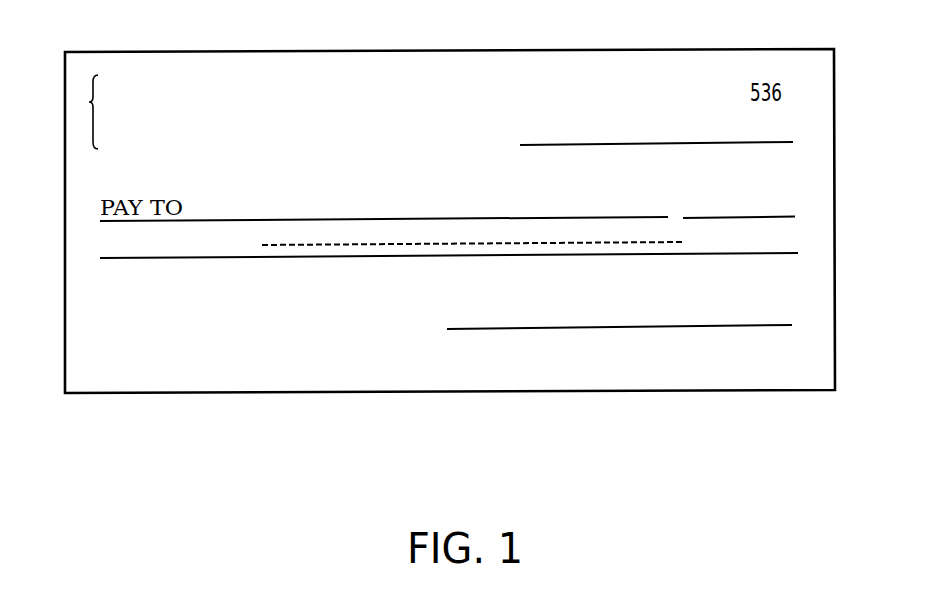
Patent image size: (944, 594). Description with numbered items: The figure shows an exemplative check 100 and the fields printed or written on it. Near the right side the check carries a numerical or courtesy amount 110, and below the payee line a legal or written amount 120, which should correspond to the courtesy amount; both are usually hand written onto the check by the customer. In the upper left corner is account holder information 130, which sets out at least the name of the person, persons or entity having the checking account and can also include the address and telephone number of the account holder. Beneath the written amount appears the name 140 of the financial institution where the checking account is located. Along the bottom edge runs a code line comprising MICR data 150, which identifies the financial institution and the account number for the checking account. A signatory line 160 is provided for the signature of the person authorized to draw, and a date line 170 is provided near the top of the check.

The check 100 is at (847, 229).
The courtesy amount 110 is at (775, 201).
The legal amount 120 is at (100, 245).
The account holder information 130 is at (89, 102).
The name of the financial institution 140 is at (100, 290).
The MICR data 150 is at (92, 360).
The signatory line 160 is at (648, 318).
The date line 170 is at (519, 130).